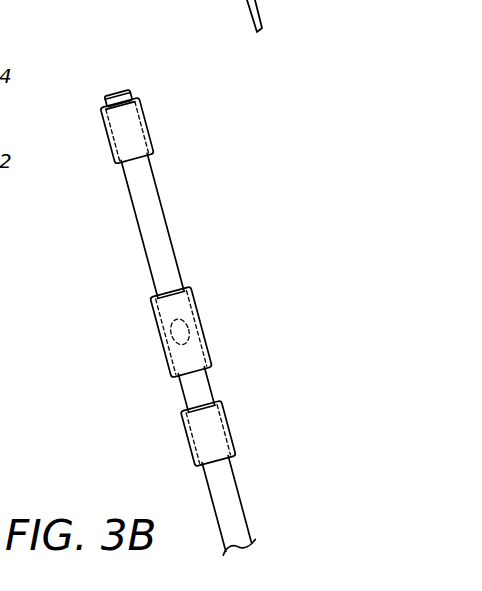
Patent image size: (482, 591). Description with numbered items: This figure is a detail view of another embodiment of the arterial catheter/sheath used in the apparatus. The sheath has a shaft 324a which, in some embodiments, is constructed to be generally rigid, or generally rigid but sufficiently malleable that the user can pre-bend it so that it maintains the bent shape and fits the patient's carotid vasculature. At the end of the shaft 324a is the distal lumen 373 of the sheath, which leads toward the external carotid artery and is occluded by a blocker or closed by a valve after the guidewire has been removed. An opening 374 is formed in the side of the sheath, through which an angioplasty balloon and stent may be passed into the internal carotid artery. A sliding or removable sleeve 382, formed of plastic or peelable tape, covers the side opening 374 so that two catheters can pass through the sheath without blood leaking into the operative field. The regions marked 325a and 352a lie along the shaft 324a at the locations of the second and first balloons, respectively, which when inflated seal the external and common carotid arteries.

The shaft 324a is at (137, 423).
The distal lumen 373 is at (112, 79).
The upper sleeve 325a is at (146, 115).
The sliding or removable sleeve 382 is at (208, 349).
The opening 374 is at (188, 323).
The lower sleeve 352a is at (230, 430).